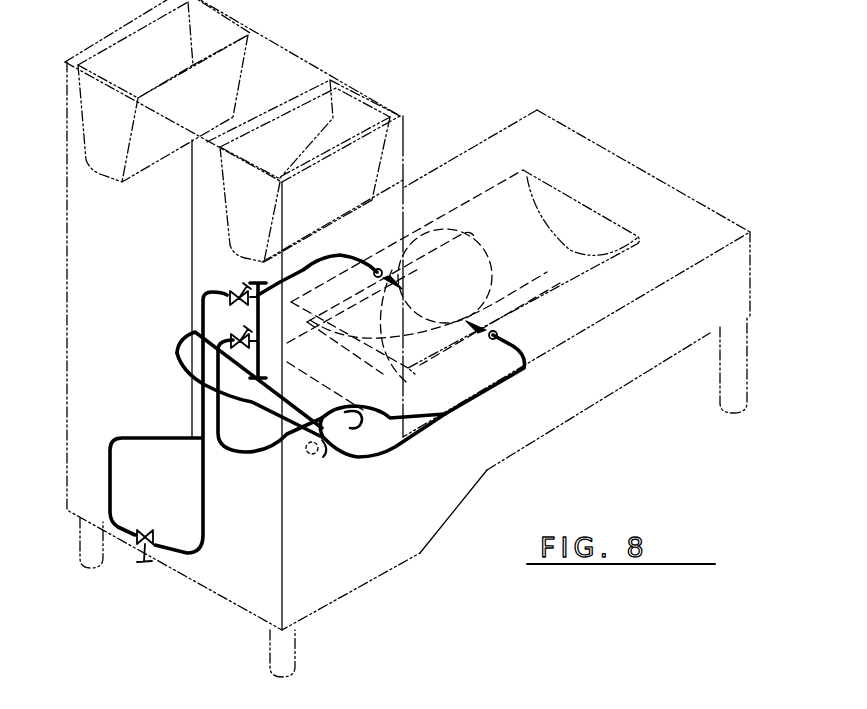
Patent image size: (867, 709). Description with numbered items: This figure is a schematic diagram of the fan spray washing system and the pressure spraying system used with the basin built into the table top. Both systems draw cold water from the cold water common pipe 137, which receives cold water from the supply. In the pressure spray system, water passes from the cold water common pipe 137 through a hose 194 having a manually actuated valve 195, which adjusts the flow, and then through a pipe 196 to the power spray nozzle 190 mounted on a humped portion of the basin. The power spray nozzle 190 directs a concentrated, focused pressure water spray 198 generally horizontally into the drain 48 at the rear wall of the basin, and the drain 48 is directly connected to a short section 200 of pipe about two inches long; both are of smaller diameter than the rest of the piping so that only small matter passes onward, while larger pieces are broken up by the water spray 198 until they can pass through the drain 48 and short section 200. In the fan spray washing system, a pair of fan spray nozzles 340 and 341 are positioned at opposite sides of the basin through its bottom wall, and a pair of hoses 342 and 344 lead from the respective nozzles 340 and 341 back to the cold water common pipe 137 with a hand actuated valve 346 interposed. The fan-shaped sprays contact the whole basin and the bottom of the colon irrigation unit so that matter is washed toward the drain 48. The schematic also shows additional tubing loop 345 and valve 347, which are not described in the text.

The drain 48 is at (307, 462).
The cold water common pipe 137 is at (255, 300).
The power spray nozzle 190 is at (384, 446).
The hose 194 is at (250, 452).
The manually actuated valve 195 is at (177, 353).
The pipe 196 is at (430, 416).
The pressure water spray 198 is at (341, 447).
The short section 200 is at (323, 457).
The fan spray nozzle 340 is at (378, 268).
The fan spray nozzle 341 is at (500, 334).
The hose 342 is at (303, 268).
The hose 344 is at (480, 388).
The tube loop 345 is at (147, 437).
The hand actuated valve 346 is at (230, 293).
The valve 347 is at (143, 529).